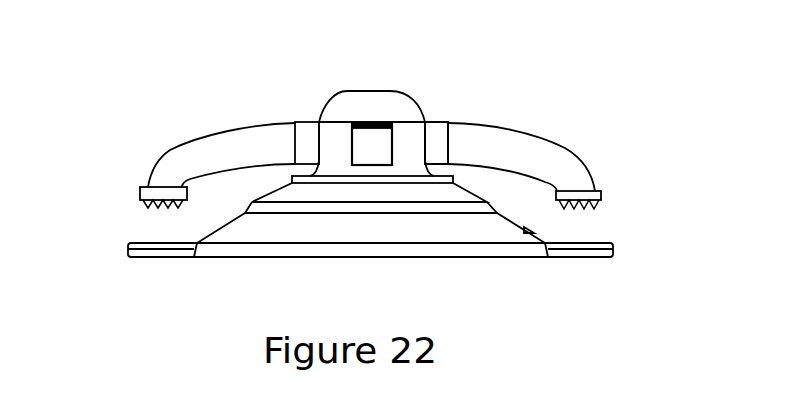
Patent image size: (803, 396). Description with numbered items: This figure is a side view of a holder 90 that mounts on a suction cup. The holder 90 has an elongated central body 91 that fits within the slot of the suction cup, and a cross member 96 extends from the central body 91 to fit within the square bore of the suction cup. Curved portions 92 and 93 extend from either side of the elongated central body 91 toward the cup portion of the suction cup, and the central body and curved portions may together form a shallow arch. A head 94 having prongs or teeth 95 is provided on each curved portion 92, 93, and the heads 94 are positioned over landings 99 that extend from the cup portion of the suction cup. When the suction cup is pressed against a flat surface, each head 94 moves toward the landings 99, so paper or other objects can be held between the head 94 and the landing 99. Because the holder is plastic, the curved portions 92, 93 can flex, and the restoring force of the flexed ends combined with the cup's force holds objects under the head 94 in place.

The holder 90 is at (258, 104).
The elongated central body 91 is at (438, 132).
The curved portion 92 is at (210, 145).
The curved portion 93 is at (552, 162).
The head 94 is at (142, 190).
The prongs or teeth 95 is at (145, 203).
The cross member 96 is at (372, 143).
The landing 99 is at (162, 250).